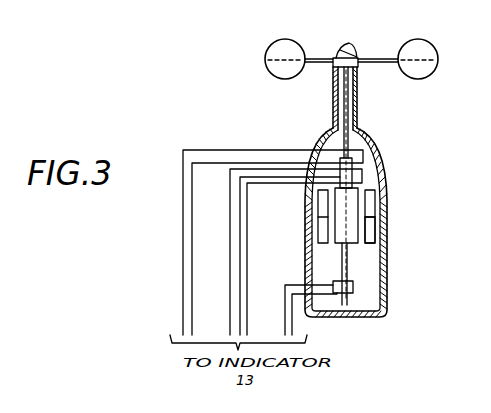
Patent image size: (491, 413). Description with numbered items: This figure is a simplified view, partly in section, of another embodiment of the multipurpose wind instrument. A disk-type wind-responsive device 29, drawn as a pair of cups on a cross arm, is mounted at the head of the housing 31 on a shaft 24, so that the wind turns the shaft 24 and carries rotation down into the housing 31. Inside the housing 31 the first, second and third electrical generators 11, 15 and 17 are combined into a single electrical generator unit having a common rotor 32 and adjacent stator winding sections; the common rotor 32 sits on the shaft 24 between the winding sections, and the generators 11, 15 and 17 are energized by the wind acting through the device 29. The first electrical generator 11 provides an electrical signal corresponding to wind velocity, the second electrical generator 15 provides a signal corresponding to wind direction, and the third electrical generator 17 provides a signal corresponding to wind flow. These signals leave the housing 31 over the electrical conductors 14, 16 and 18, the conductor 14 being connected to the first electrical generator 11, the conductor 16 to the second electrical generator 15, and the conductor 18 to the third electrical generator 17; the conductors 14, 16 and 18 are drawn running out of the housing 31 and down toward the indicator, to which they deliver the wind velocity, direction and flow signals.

The disk-type wind-responsive device 29 is at (328, 38).
The shaft 24 is at (362, 142).
The housing 31 is at (372, 169).
The first electrical generator 11 is at (376, 203).
The second electrical generator 15 is at (374, 235).
The common rotor 32 is at (352, 237).
The third electrical generator 17 is at (352, 284).
The electrical conductor 14 is at (183, 223).
The electrical conductor 16 is at (236, 255).
The electrical conductor 18 is at (285, 298).